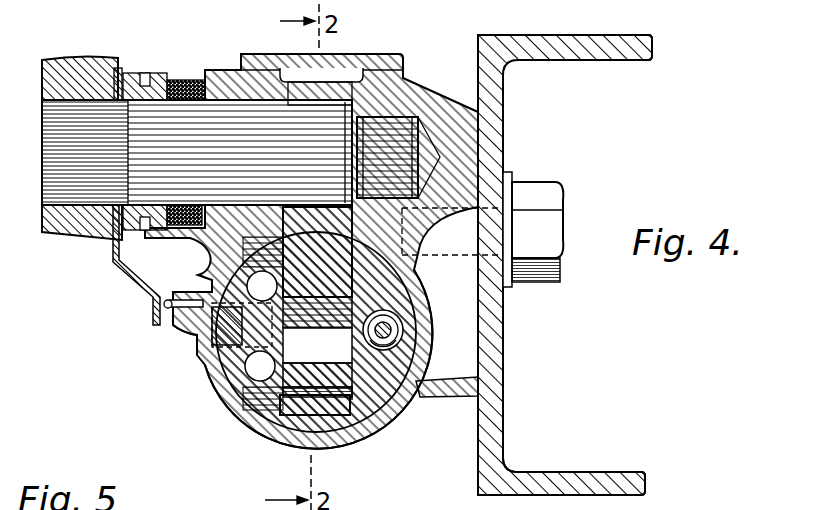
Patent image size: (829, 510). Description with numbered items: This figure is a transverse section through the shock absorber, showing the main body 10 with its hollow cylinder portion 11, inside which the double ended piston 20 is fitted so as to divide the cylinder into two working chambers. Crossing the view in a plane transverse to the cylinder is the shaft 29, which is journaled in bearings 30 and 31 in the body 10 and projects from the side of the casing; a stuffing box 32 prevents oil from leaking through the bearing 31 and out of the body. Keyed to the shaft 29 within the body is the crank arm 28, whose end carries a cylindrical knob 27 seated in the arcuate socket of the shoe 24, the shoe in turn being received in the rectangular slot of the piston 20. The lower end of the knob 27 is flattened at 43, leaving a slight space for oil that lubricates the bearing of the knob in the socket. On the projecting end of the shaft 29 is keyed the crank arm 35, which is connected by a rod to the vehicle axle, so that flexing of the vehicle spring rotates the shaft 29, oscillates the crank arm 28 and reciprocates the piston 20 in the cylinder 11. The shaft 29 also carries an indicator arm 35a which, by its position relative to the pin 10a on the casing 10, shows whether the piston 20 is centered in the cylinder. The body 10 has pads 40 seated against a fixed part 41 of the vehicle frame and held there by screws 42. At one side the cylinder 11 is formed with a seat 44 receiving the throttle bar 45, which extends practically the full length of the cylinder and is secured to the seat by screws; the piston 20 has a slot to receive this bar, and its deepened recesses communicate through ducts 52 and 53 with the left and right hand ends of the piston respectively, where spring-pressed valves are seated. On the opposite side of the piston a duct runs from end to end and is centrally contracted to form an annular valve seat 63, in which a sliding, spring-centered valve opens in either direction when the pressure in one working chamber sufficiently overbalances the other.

The main body 10 is at (440, 105).
The pin 10a is at (170, 318).
The hollow cylinder portion 11 is at (250, 428).
The double ended piston 20 is at (425, 363).
The shoe 24 is at (290, 408).
The cylindrical knob 27 is at (387, 397).
The crank arm 28 is at (337, 93).
The shaft 29 is at (222, 115).
The bearing 30 is at (390, 115).
The bearing 31 is at (210, 76).
The stuffing box 32 is at (157, 84).
The crank arm 35 is at (80, 62).
The indicator arm 35a is at (120, 273).
The pads 40 is at (477, 150).
The fixed part 41 is at (597, 58).
The screws 42 is at (550, 222).
The flattened lower end 43 is at (300, 378).
The seat 44 is at (200, 340).
The throttle bar 45 is at (200, 363).
The duct 52 is at (230, 405).
The duct 53 is at (203, 276).
The annular valve seat 63 is at (400, 320).